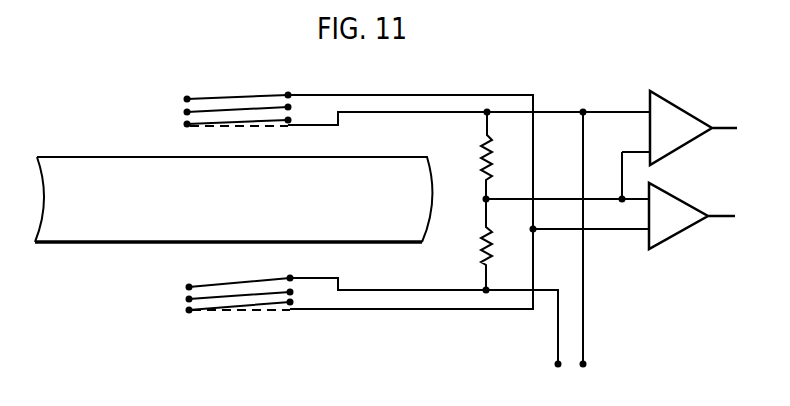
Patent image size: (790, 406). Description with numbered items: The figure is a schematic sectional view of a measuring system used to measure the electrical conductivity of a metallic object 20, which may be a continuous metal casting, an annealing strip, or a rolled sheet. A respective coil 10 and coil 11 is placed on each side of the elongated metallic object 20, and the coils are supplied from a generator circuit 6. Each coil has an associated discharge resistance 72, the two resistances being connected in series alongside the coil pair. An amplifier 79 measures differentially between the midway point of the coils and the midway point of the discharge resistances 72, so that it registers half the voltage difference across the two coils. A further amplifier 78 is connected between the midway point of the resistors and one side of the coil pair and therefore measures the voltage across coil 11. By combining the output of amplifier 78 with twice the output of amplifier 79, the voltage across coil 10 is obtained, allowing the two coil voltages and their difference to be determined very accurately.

The coil 10 is at (246, 98).
The coil 11 is at (244, 300).
The metallic object 20 is at (89, 156).
The discharge resistances 72 is at (477, 156).
The amplifier 78 is at (694, 112).
The amplifier 79 is at (692, 229).
The generator circuit 6 is at (558, 369).